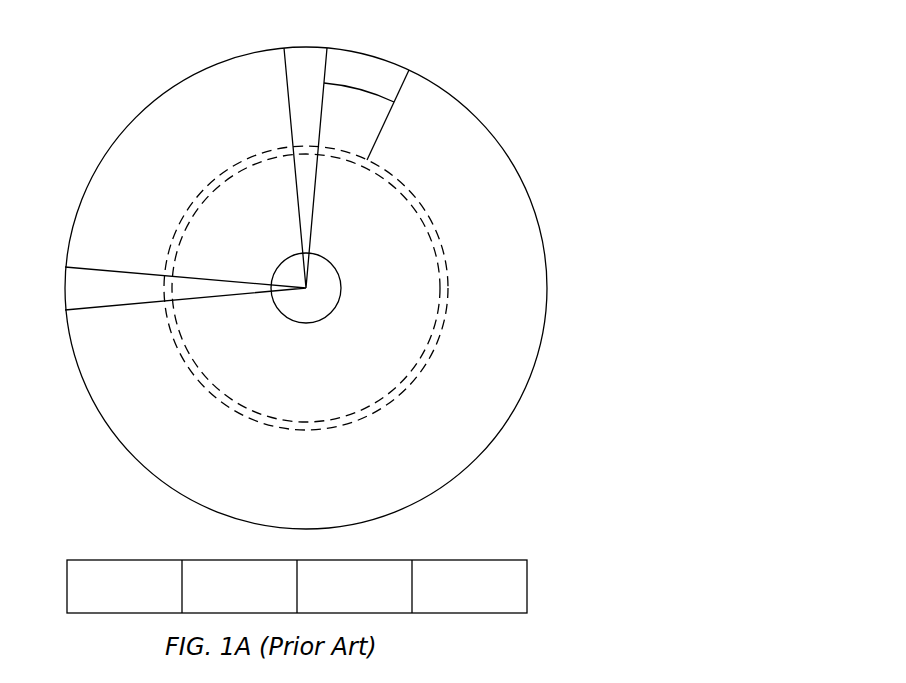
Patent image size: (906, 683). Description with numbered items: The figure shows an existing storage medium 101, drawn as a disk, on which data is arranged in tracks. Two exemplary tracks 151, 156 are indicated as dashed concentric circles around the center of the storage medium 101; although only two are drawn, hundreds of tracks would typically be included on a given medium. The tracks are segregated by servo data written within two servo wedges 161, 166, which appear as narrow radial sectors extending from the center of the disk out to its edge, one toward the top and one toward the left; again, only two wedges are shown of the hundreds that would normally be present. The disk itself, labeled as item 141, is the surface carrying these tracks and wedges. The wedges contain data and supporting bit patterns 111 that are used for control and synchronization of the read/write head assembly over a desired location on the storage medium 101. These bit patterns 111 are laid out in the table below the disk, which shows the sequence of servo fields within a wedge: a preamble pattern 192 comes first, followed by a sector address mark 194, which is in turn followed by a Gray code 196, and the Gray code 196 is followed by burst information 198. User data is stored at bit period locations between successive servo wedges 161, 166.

The storage medium 101 is at (93, 62).
The data and supporting bit patterns 111 is at (512, 528).
The disk 141 is at (530, 380).
The track 151 is at (443, 322).
The track 156 is at (437, 285).
The servo wedge 161 is at (308, 52).
The servo wedge 166 is at (67, 284).
The preamble pattern 192 is at (109, 607).
The sector address mark 194 is at (224, 607).
The Gray code 196 is at (339, 607).
The burst information 198 is at (454, 607).